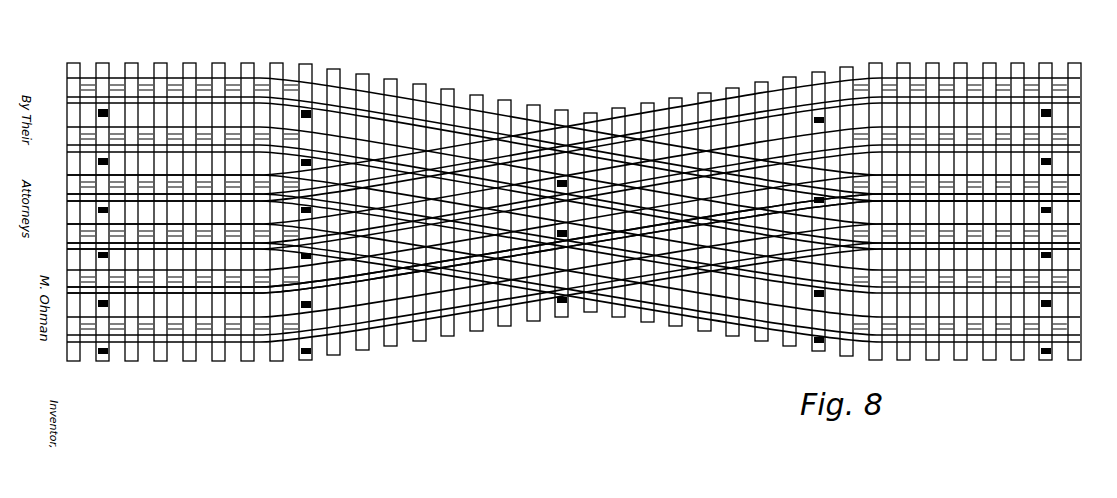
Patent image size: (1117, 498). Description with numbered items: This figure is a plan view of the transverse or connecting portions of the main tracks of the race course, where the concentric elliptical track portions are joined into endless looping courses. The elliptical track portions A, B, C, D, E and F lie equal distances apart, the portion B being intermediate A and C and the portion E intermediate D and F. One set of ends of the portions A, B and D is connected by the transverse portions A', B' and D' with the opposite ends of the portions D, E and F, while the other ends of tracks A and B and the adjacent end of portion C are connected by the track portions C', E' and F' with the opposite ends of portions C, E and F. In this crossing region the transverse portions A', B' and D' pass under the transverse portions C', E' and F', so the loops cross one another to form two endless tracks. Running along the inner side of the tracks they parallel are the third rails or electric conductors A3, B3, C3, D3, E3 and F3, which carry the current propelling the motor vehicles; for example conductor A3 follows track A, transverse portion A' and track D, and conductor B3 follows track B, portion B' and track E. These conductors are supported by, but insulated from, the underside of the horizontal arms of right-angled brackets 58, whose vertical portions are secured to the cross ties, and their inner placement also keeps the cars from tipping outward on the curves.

The track portion A is at (573, 318).
The track portion B is at (573, 294).
The track portion C is at (581, 307).
The track portion D is at (583, 152).
The track portion E is at (583, 128).
The track portion F is at (573, 101).
The transverse portion A' is at (573, 276).
The transverse portion B' is at (573, 259).
The transverse portion C' is at (573, 241).
The transverse portion D' is at (573, 135).
The transverse portion E' is at (573, 165).
The transverse portion F' is at (573, 140).
The third rail conductor A3 is at (945, 340).
The third rail conductor B3 is at (915, 297).
The third rail conductor C3 is at (860, 250).
The third rail conductor D3 is at (1032, 202).
The third rail conductor E3 is at (975, 153).
The third rail conductor F3 is at (917, 107).
The right-angled bracket 58 is at (314, 354).